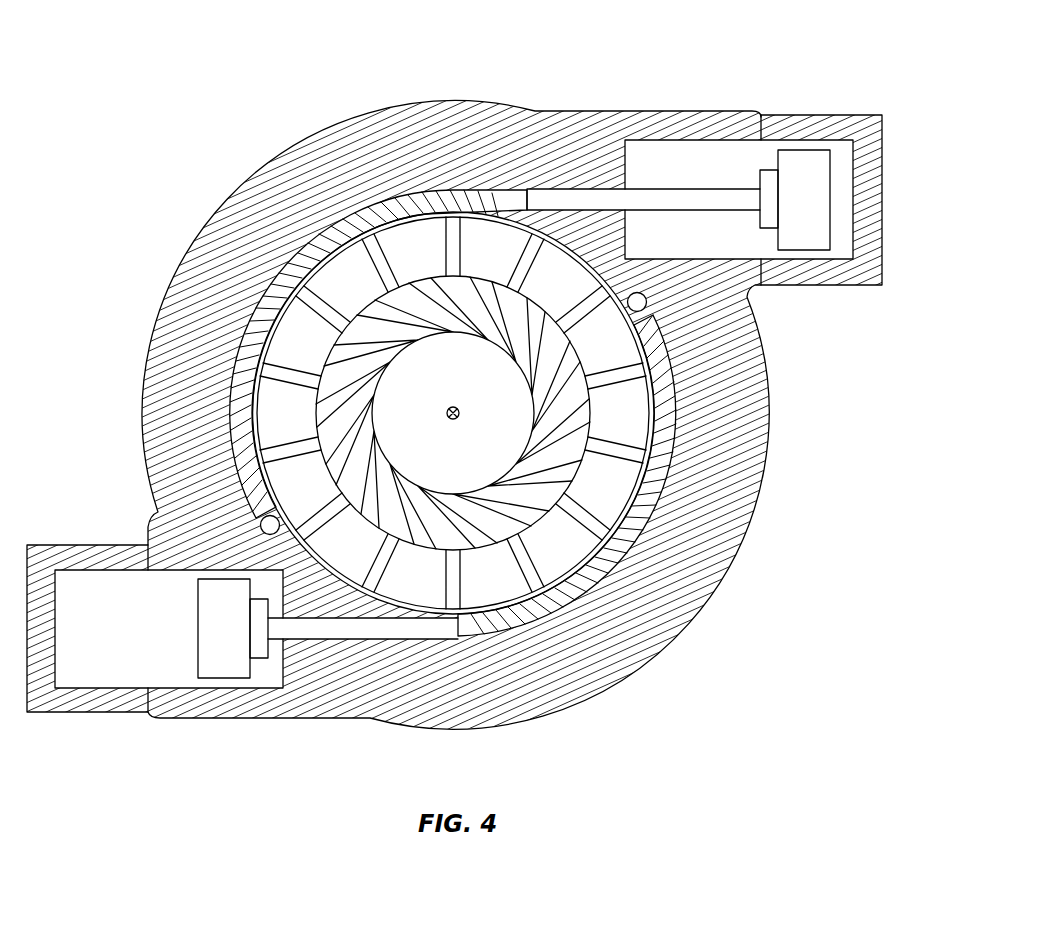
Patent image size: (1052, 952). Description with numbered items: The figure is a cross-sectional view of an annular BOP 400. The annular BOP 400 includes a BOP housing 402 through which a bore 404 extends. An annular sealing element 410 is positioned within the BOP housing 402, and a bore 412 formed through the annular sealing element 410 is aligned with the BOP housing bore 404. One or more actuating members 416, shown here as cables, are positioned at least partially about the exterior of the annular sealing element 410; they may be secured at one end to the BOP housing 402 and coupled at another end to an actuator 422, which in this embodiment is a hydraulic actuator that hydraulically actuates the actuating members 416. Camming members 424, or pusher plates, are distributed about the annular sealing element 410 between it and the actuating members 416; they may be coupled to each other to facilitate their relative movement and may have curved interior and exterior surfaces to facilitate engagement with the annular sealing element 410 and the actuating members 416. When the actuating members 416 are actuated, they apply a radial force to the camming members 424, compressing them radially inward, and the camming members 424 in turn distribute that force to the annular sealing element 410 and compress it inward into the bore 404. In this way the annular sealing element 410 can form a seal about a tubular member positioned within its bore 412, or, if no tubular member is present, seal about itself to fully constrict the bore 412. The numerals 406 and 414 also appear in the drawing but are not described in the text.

The annular BOP 400 is at (467, 389).
The BOP housing 402 is at (400, 98).
The BOP housing bore 404 is at (626, 563).
The hub 406 is at (447, 413).
The annular sealing element 410 is at (397, 305).
The annular sealing element bore 412 is at (400, 353).
The rotational axis 414 is at (453, 407).
The actuating members 416 is at (240, 345).
The actuator 422 is at (820, 150).
The camming members 424 is at (563, 556).